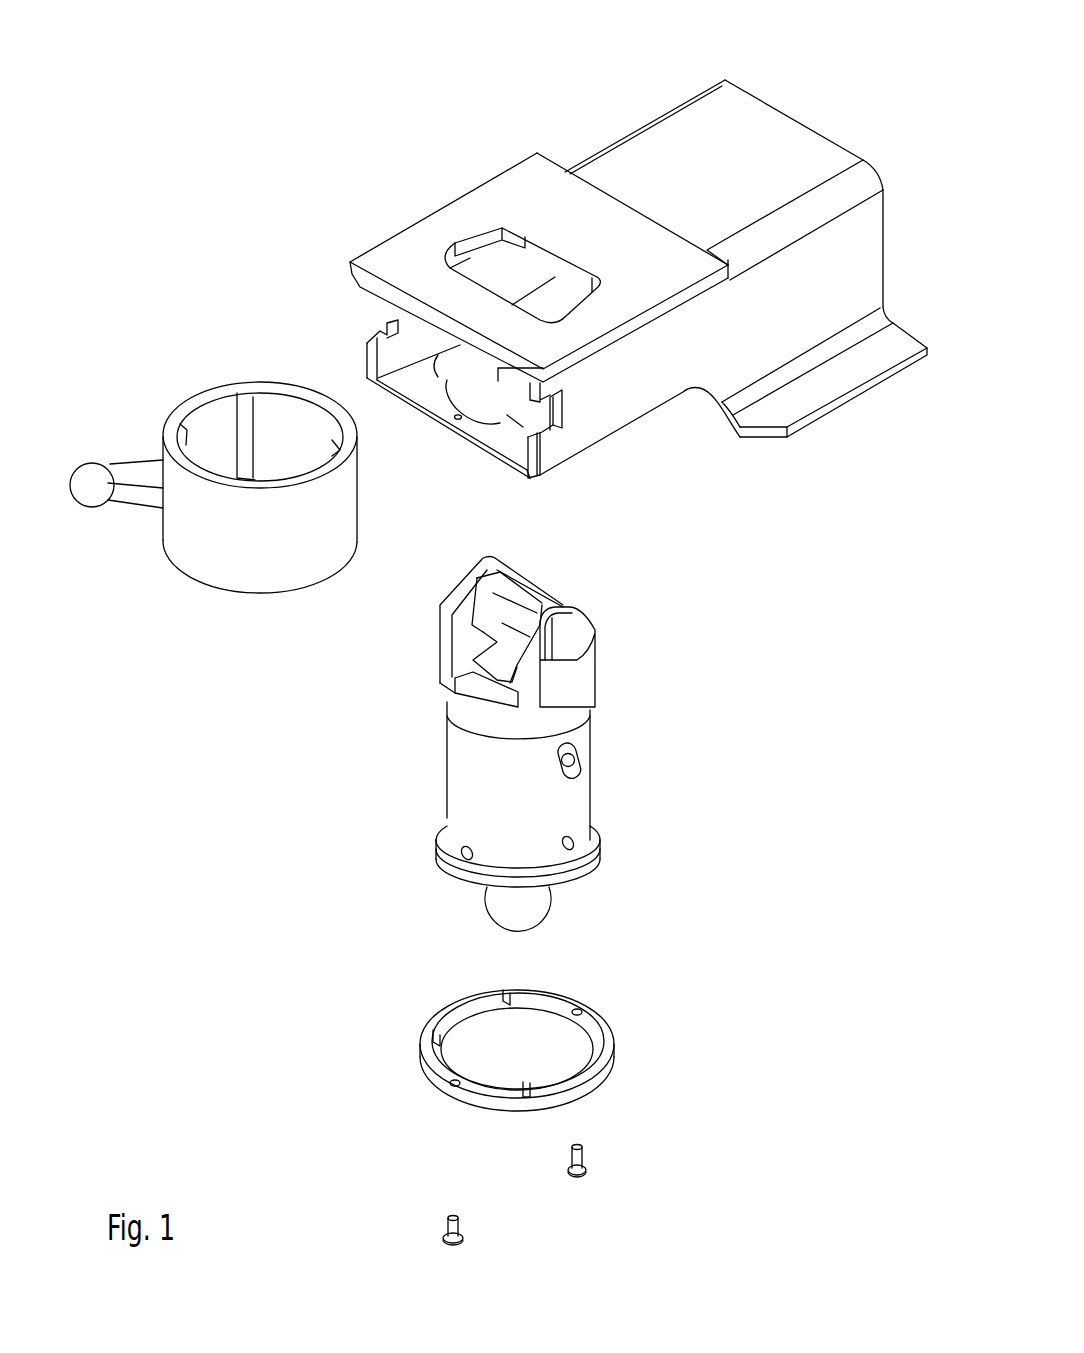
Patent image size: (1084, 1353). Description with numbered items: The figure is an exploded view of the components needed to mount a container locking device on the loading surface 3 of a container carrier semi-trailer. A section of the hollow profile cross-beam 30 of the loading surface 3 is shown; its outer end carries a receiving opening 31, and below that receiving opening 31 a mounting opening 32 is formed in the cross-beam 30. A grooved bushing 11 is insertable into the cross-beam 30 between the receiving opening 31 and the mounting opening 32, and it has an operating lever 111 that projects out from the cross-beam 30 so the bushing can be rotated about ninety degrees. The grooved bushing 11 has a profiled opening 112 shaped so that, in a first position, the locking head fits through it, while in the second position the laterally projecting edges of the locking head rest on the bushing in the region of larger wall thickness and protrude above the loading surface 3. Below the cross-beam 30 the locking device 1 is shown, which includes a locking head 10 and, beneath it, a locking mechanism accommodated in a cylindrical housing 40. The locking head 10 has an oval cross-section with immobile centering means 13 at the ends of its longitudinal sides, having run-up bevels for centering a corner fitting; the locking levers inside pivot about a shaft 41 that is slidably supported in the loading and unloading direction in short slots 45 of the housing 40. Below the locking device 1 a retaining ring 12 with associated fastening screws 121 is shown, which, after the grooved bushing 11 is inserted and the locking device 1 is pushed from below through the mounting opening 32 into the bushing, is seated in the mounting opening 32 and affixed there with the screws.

The locking device 1 is at (430, 782).
The loading surface 3 is at (483, 157).
The locking head 10 is at (428, 672).
The grooved bushing 11 is at (307, 393).
The retaining ring 12 is at (600, 1027).
The centering means 13 is at (570, 630).
The cross-beam 30 is at (688, 160).
The receiving opening 31 is at (483, 282).
The mounting opening 32 is at (492, 423).
The cylindrical housing 40 is at (540, 795).
The shaft 41 is at (573, 766).
The short slots 45 is at (573, 744).
The operating lever 111 is at (123, 497).
The profiled opening 112 is at (197, 422).
The fastening screws 121 is at (461, 1223).